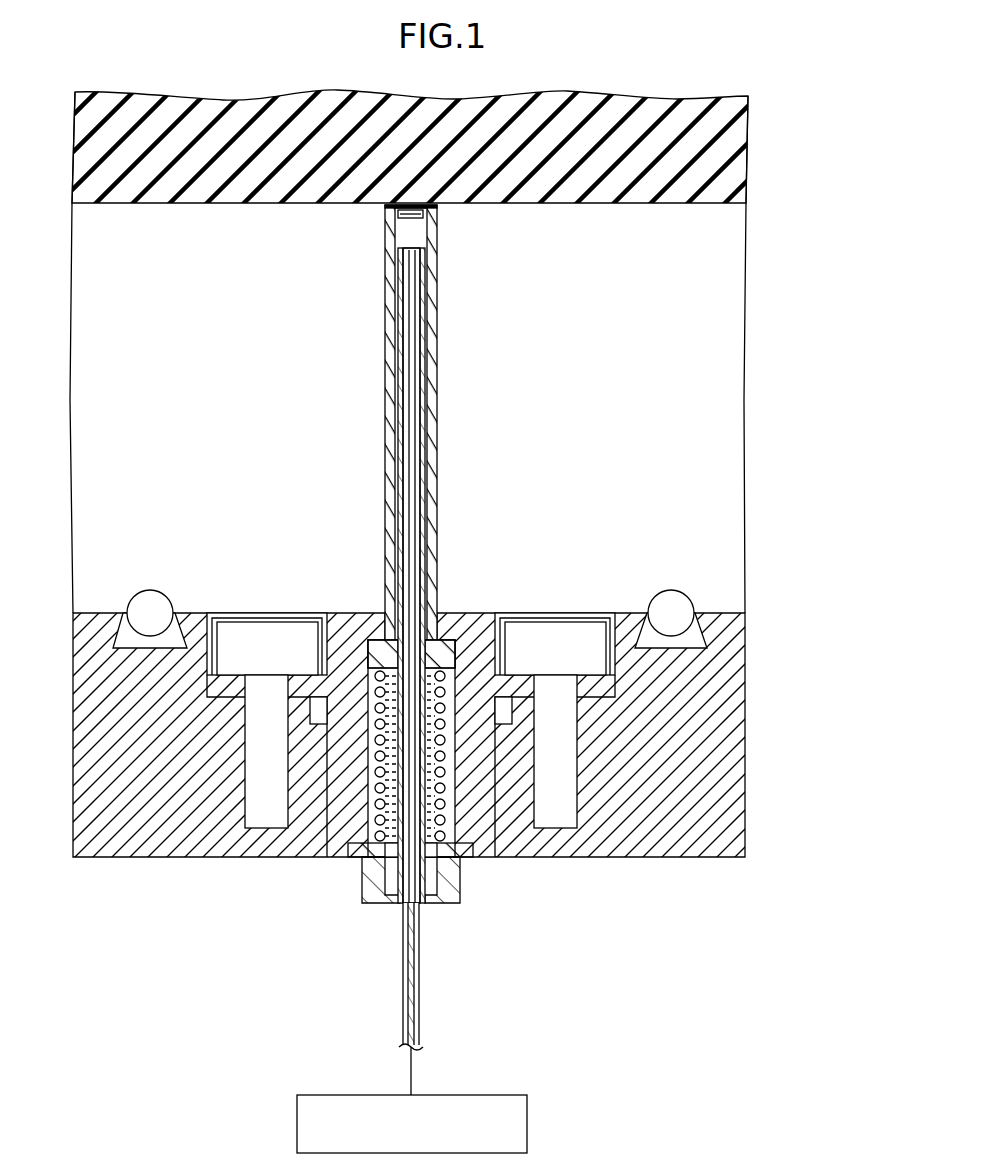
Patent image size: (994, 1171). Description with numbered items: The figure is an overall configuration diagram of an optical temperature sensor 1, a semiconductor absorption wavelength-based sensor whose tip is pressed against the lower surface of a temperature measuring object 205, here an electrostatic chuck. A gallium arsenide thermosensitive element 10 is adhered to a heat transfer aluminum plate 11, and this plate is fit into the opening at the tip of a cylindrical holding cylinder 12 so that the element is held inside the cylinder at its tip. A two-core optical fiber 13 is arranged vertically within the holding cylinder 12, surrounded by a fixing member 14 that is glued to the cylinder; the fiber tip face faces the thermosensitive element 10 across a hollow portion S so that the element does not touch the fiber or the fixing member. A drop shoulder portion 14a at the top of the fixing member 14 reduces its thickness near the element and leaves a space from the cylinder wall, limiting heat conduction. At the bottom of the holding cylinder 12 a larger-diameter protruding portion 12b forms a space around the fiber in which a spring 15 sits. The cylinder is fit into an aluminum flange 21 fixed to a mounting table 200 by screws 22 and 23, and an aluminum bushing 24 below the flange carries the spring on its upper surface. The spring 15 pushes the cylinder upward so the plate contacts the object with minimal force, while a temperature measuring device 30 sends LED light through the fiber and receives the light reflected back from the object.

The optical temperature sensor 1 is at (334, 377).
The thermosensitive element 10 is at (408, 219).
The heat transfer aluminum plate 11 is at (394, 207).
The holding cylinder 12 is at (437, 387).
The protruding portion 12b is at (450, 645).
The optical fiber 13 is at (418, 1021).
The fixing member 14 is at (428, 311).
The drop shoulder portion 14a is at (428, 281).
The spring 15 is at (366, 845).
The flange 21 is at (345, 630).
The screw 22 is at (552, 635).
The screw 23 is at (268, 635).
The bushing 24 is at (460, 882).
The temperature measuring device 30 is at (527, 1125).
The mounting table 200 is at (745, 768).
The temperature measuring object 205 is at (750, 153).
The hollow portion S is at (415, 238).